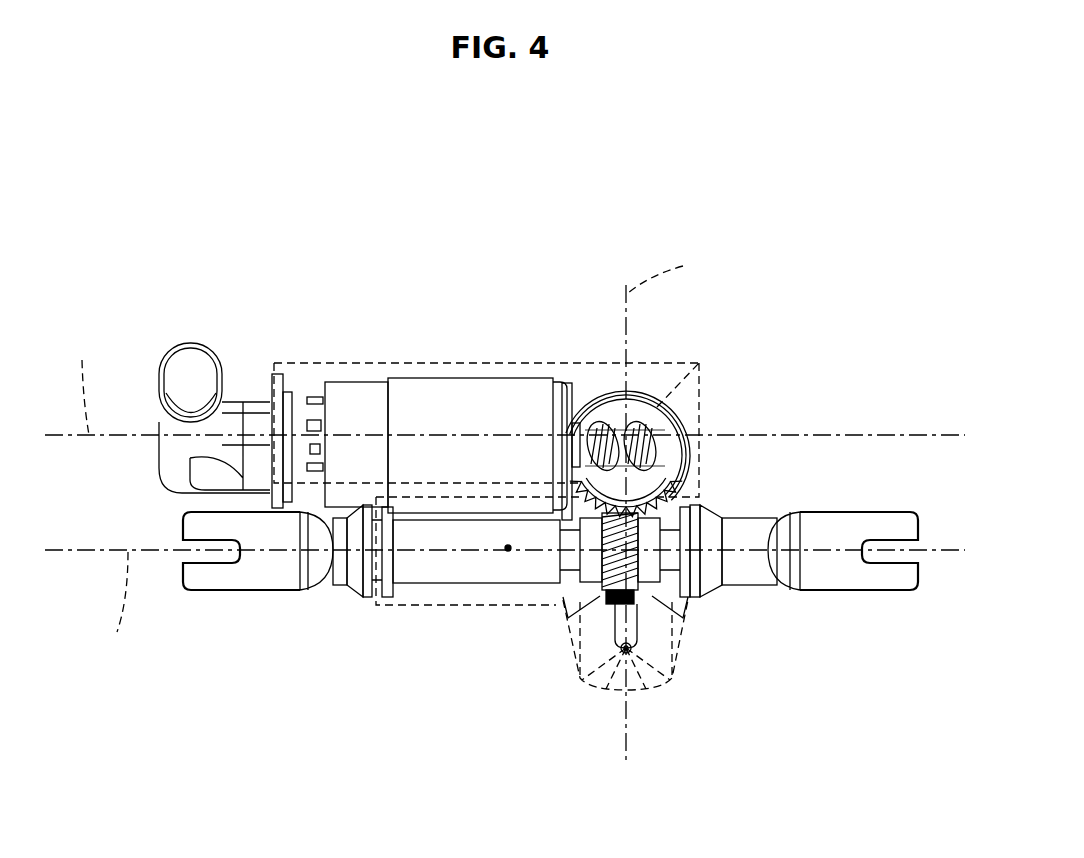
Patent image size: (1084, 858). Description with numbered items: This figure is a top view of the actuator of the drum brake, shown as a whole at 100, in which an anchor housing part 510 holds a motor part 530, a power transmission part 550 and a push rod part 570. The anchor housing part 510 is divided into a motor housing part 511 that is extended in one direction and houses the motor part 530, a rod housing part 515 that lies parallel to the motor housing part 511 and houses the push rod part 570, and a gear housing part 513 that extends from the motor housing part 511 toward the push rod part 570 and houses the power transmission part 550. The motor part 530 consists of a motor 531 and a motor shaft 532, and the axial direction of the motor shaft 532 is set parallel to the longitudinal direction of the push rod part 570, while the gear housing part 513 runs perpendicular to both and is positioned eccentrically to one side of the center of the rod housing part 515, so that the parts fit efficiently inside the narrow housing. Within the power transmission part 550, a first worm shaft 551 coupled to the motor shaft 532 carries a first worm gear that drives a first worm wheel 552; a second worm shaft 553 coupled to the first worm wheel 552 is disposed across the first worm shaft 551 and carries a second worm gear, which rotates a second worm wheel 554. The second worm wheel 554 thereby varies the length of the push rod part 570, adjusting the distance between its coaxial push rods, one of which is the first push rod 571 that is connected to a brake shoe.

The driving device 100 is at (100, 120).
The anchor housing part 510 is at (372, 240).
The motor housing part 511 is at (390, 363).
The gear housing part 513 is at (700, 477).
The rod housing part 515 is at (417, 605).
The motor part 530 is at (593, 283).
The motor 531 is at (497, 390).
The motor shaft 532 is at (580, 388).
The power transmission part 550 is at (808, 348).
The first worm shaft 551 is at (648, 415).
The first worm wheel 552 is at (677, 473).
The second worm shaft 553 is at (650, 606).
The second worm wheel 554 is at (603, 580).
The push rod part 570 is at (255, 690).
The first push rod 571 is at (253, 578).